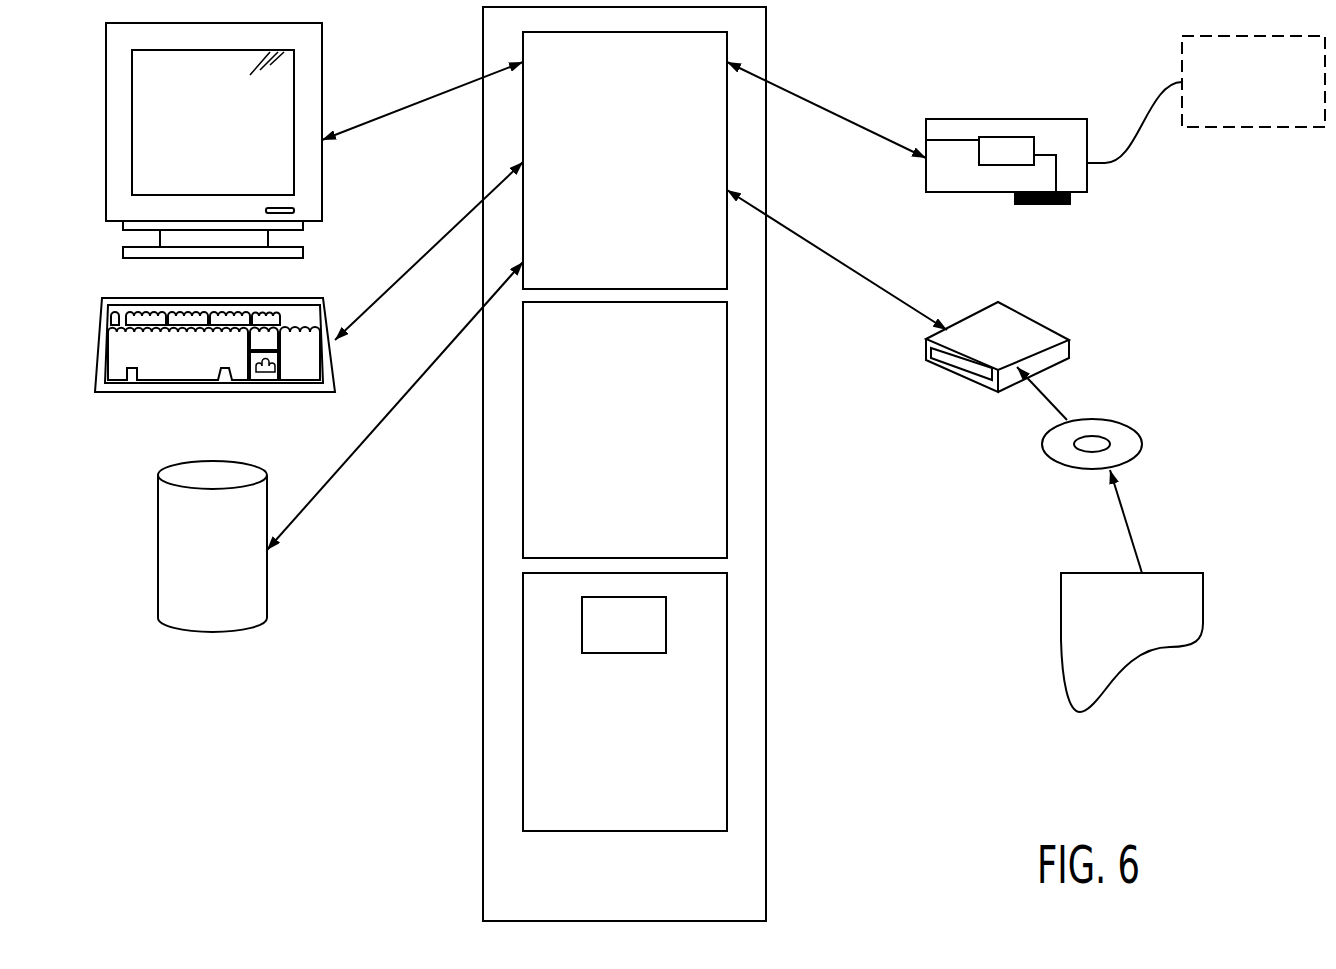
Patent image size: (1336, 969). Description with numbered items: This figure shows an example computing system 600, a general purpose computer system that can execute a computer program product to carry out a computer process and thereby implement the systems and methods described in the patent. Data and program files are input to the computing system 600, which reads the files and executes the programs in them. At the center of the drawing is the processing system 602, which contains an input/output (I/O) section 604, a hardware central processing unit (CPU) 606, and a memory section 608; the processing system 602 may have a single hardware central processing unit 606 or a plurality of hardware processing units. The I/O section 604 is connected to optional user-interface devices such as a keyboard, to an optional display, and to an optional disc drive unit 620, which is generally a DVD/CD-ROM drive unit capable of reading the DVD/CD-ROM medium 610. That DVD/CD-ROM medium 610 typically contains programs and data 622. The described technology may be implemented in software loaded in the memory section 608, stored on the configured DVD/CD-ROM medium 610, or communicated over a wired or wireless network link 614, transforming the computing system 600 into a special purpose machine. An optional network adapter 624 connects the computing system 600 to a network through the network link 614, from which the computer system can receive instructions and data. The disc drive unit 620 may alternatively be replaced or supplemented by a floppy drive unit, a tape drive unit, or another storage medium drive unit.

The computing system 600 is at (345, 803).
The processing system 602 is at (638, 893).
The input/output (I/O) section 604 is at (638, 182).
The hardware central processing unit (CPU) 606 is at (638, 452).
The memory section 608 is at (638, 725).
The DVD/CD-ROM medium 610 is at (1137, 430).
The network link 614 is at (1120, 157).
The disc drive unit 620 is at (998, 302).
The programs and data 622 is at (1060, 588).
The network adapter 624 is at (973, 119).